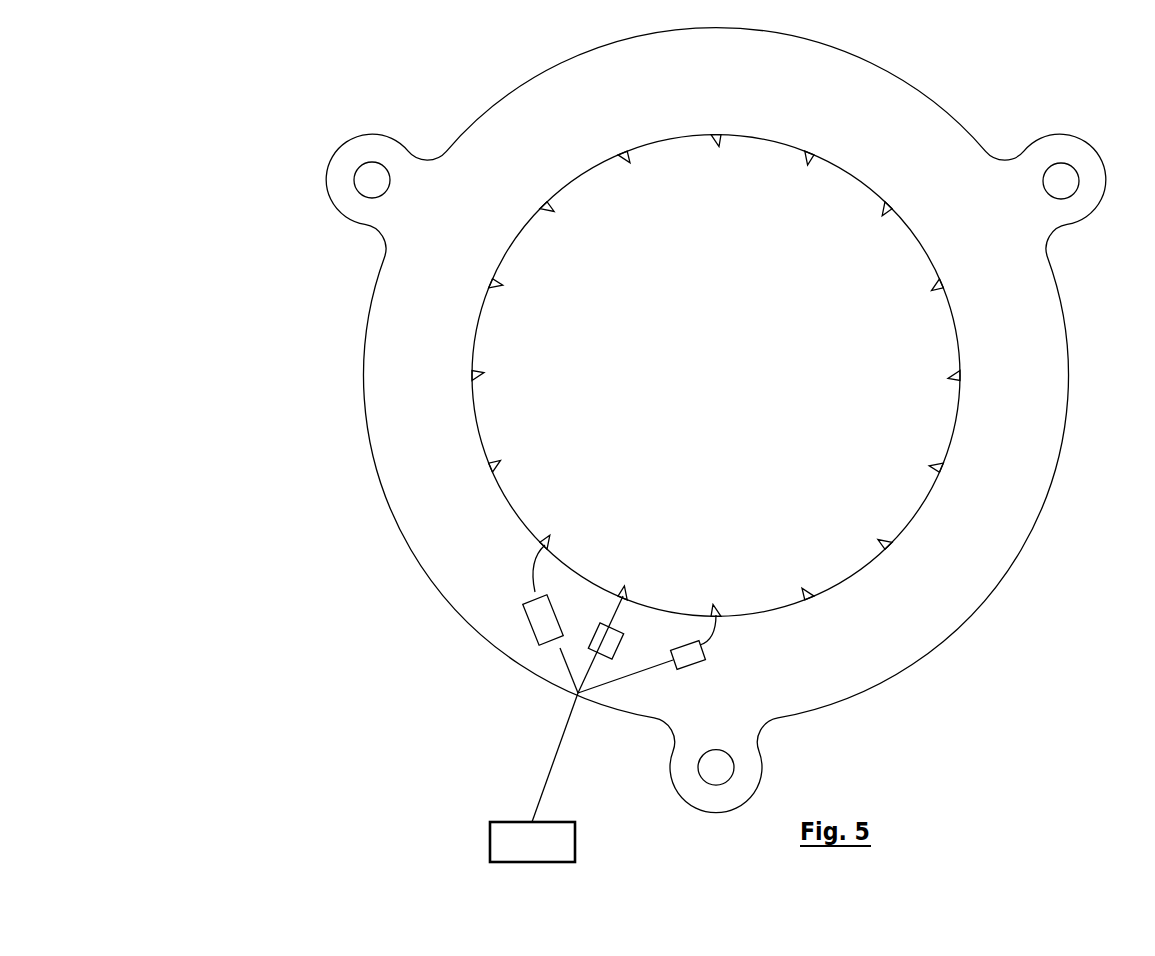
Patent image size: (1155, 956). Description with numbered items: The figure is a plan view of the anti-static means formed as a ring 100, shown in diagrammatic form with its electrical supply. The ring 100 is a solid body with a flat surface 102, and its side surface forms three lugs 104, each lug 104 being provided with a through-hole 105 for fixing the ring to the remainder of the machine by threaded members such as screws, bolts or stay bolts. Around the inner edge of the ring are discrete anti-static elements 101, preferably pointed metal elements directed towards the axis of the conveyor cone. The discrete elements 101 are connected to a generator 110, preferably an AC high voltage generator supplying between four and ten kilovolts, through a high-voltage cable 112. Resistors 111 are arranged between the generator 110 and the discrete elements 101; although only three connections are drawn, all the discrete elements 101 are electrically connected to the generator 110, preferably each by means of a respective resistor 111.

The anti-static ring 100 is at (295, 286).
The discrete anti-static elements 101 is at (635, 162).
The flat surface 102 is at (665, 108).
The lug 104 is at (347, 134).
The through-hole 105 is at (1067, 178).
The generator 110 is at (532, 842).
The resistor 111 is at (611, 622).
The high-voltage cable 112 is at (553, 765).